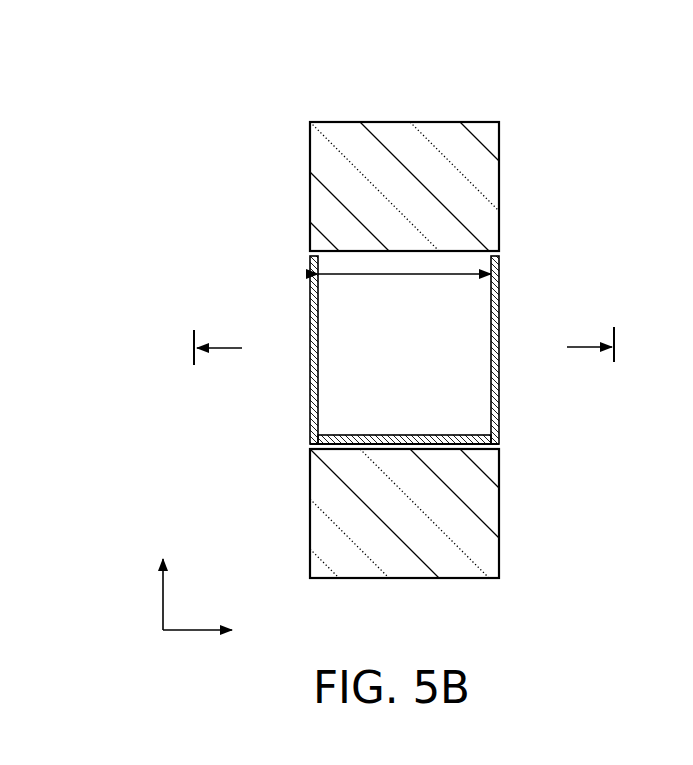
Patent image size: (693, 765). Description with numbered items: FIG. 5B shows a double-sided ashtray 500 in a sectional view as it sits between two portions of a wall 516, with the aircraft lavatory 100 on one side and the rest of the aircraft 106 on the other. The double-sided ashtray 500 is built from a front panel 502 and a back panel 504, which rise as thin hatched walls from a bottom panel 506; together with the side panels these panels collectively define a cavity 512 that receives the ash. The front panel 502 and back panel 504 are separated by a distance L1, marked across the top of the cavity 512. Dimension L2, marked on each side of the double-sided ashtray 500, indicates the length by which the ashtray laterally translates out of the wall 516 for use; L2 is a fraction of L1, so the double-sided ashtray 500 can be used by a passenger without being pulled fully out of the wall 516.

The aircraft lavatory 100 is at (588, 167).
The aircraft 106 is at (191, 230).
The double-sided ashtray 500 is at (229, 126).
The front panel 502 is at (492, 392).
The back panel 504 is at (310, 348).
The bottom panel 506 is at (346, 441).
The cavity 512 is at (466, 300).
The wall 516 is at (410, 126).